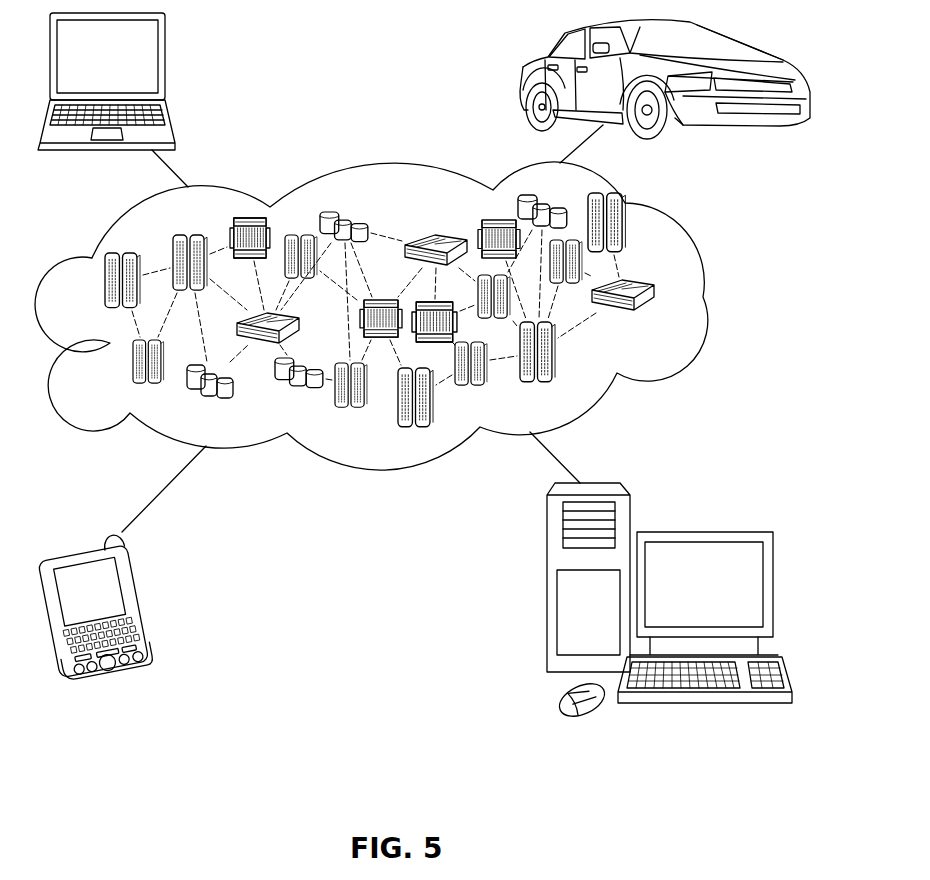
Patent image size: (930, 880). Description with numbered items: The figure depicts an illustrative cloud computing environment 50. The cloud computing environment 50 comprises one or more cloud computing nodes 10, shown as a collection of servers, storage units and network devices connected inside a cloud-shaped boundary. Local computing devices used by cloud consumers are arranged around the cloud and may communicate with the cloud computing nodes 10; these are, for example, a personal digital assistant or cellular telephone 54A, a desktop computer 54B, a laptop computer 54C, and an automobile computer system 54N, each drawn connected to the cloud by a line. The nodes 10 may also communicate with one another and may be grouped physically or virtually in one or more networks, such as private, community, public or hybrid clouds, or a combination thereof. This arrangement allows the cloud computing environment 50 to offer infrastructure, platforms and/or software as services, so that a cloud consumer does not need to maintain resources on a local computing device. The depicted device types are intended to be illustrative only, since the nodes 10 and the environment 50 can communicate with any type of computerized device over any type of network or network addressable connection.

The cloud computing environment 50 is at (705, 292).
The cloud computing node 10 is at (657, 319).
The personal digital assistant or cellular telephone 54A is at (150, 607).
The desktop computer 54B is at (703, 532).
The laptop computer 54C is at (166, 68).
The automobile computer system 54N is at (527, 82).